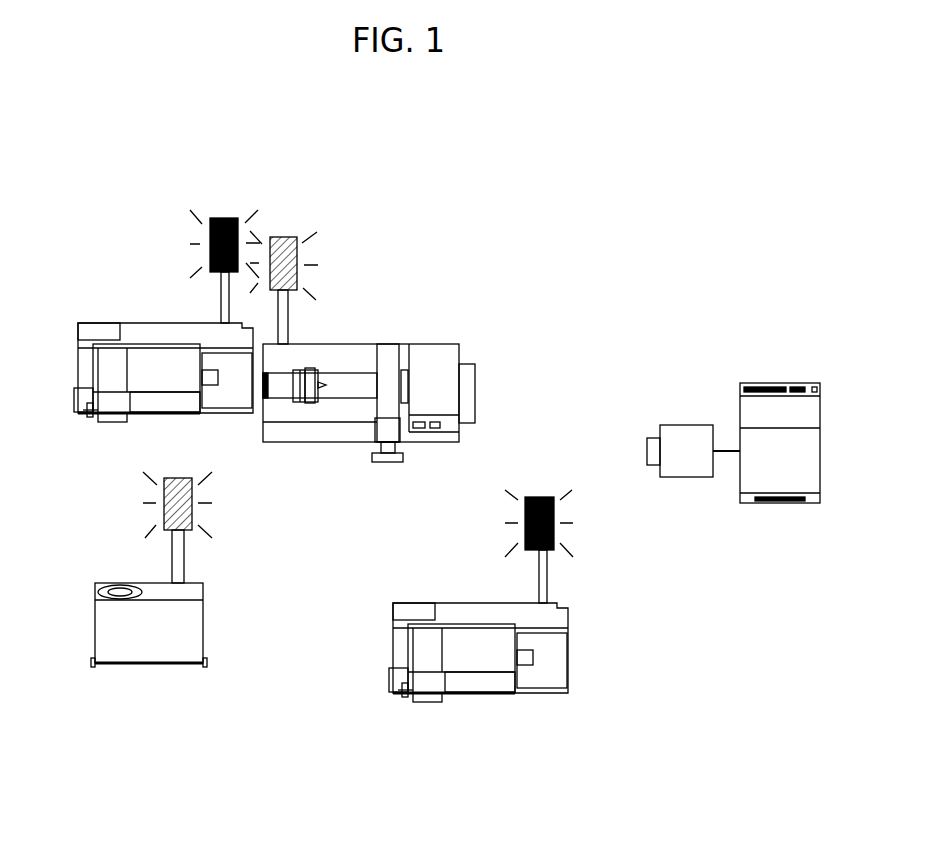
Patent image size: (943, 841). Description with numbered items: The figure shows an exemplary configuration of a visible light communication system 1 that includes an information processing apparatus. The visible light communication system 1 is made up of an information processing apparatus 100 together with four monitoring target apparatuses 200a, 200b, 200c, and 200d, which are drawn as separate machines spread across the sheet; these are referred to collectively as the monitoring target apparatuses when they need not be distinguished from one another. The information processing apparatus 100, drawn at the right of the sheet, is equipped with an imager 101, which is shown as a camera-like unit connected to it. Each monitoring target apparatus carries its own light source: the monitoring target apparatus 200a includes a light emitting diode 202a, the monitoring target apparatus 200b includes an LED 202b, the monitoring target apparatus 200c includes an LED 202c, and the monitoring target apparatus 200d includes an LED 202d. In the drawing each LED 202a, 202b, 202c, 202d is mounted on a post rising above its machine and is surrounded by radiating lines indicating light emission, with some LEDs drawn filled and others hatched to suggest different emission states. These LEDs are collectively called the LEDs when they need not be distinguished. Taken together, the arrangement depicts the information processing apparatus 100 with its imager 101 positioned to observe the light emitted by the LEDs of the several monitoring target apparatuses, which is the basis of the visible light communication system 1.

The visible light communication system 1 is at (654, 226).
The information processing apparatus 100 is at (718, 378).
The imager 101 is at (688, 425).
The monitoring target apparatus 200a is at (118, 322).
The monitoring target apparatus 200b is at (362, 325).
The monitoring target apparatus 200c is at (215, 582).
The monitoring target apparatus 200d is at (475, 588).
The light emitting diode (LED) 202a is at (210, 253).
The LED 202b is at (297, 270).
The LED 202c is at (164, 515).
The LED 202d is at (525, 527).